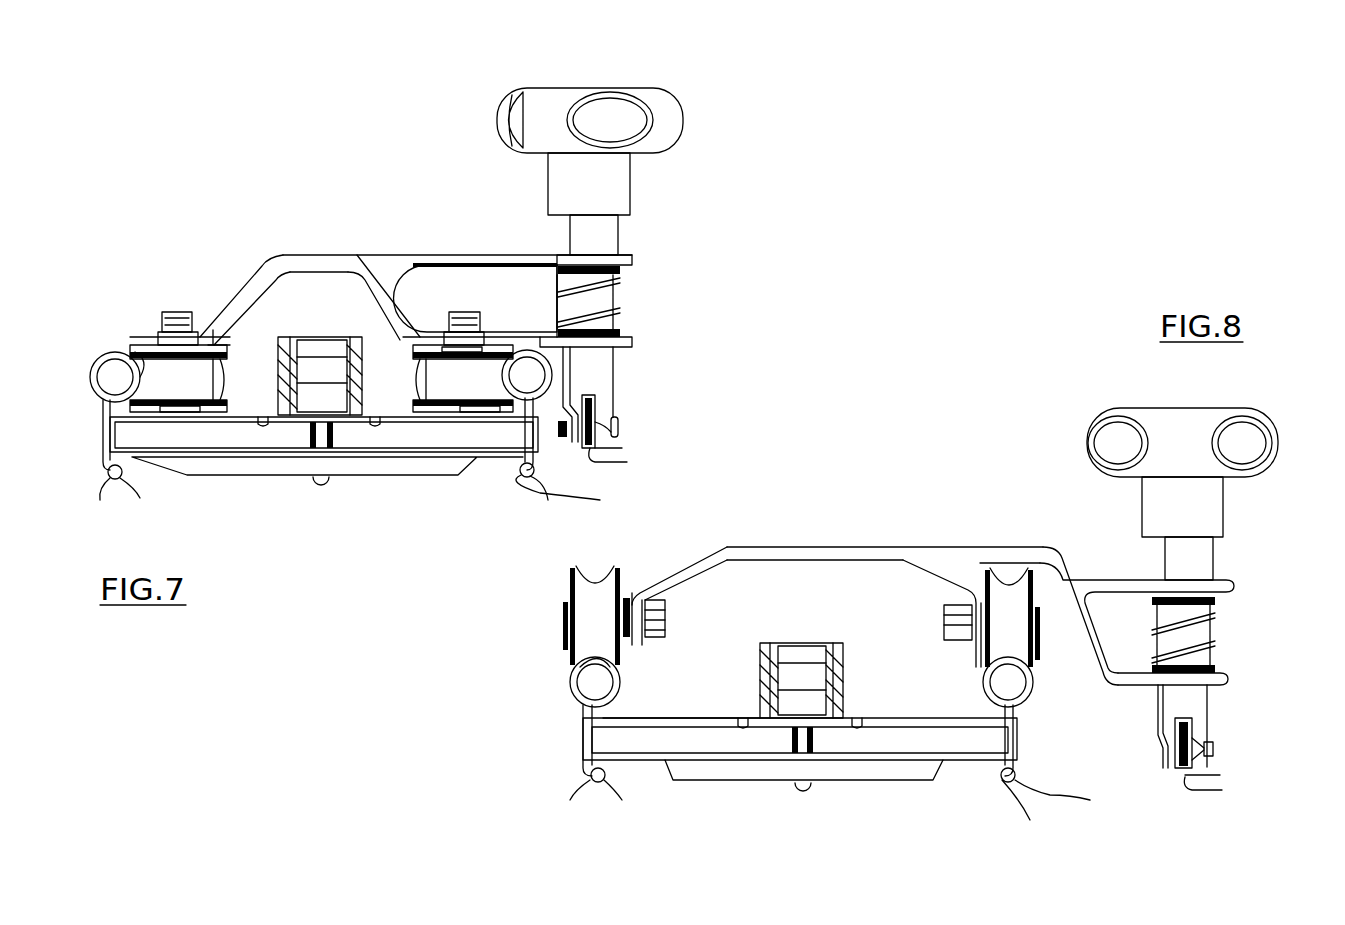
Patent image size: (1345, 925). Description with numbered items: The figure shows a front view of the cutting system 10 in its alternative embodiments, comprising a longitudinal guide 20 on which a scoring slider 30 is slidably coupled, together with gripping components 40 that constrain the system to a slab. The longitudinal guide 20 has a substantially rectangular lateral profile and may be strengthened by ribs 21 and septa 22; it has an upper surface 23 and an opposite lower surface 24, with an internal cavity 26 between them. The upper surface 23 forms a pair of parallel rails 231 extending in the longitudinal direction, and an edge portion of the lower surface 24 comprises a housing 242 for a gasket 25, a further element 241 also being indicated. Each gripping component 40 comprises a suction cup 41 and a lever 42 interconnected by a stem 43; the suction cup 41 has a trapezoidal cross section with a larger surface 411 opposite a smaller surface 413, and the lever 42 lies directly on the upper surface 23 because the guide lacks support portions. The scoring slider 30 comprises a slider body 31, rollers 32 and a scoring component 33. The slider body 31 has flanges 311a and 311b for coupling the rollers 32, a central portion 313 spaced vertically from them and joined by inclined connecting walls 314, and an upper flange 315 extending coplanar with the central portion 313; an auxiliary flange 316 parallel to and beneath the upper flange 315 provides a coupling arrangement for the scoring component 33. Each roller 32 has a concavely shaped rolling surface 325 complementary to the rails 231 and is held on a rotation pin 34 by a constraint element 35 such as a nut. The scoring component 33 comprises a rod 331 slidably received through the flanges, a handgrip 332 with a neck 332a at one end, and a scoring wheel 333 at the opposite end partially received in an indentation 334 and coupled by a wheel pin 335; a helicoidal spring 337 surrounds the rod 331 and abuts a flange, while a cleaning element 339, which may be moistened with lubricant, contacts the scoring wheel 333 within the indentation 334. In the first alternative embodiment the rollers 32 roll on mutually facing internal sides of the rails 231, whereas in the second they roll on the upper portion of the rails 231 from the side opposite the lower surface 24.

In FIG. 7, the cutting system 10 is at (253, 187).
In FIG. 8, the cutting system 10 is at (845, 422).
In FIG. 7, the longitudinal guide 20 is at (100, 405).
In FIG. 8, the longitudinal guide 20 is at (578, 735).
In FIG. 7, the ribs 21 is at (262, 415).
In FIG. 8, the ribs 21 is at (742, 716).
In FIG. 7, the septa 22 is at (330, 450).
In FIG. 8, the septa 22 is at (808, 755).
In FIG. 7, the upper surface 23 is at (400, 385).
In FIG. 8, the upper surface 23 is at (708, 716).
In FIG. 7, the lower surface 24 is at (478, 470).
In FIG. 8, the lower surface 24 is at (958, 765).
In FIG. 7, the gasket 25 is at (533, 475).
In FIG. 8, the gasket 25 is at (596, 783).
In FIG. 7, the internal cavity 26 is at (520, 463).
In FIG. 8, the internal cavity 26 is at (670, 762).
In FIG. 7, the scoring slider 30 is at (483, 143).
In FIG. 8, the scoring slider 30 is at (1080, 467).
In FIG. 7, the slider body 31 is at (438, 252).
In FIG. 8, the slider body 31 is at (932, 542).
In FIG. 7, the rollers 32 is at (222, 376).
In FIG. 8, the rollers 32 is at (600, 568).
In FIG. 7, the scoring component 33 is at (625, 95).
In FIG. 8, the scoring component 33 is at (1240, 410).
In FIG. 7, the rotation pin 34 is at (185, 412).
In FIG. 8, the rotation pin 34 is at (562, 630).
In FIG. 7, the constraint element 35 is at (172, 310).
In FIG. 8, the constraint element 35 is at (662, 635).
In FIG. 7, the gripping component 40 is at (285, 330).
In FIG. 8, the gripping component 40 is at (768, 640).
In FIG. 7, the suction cup 41 is at (408, 478).
In FIG. 8, the suction cup 41 is at (800, 790).
In FIG. 7, the lever 42 is at (328, 336).
In FIG. 8, the lever 42 is at (782, 642).
In FIG. 7, the stem 43 is at (313, 452).
In FIG. 8, the stem 43 is at (790, 755).
In FIG. 7, the rails 231 is at (108, 352).
In FIG. 8, the rails 231 is at (567, 686).
In FIG. 7, the bottom plate end 241 is at (341, 503).
In FIG. 8, the bottom plate end 241 is at (824, 811).
In FIG. 7, the housing 242 is at (353, 499).
In FIG. 8, the housing 242 is at (828, 800).
In FIG. 7, the flange 311a is at (213, 328).
In FIG. 8, the flange 311a is at (642, 647).
In FIG. 7, the flange 311b is at (422, 333).
In FIG. 8, the flange 311b is at (975, 660).
In FIG. 7, the central portion 313 is at (355, 254).
In FIG. 8, the central portion 313 is at (830, 545).
In FIG. 7, the connecting walls 314 is at (255, 300).
In FIG. 8, the connecting walls 314 is at (690, 565).
In FIG. 7, the upper flange 315 is at (500, 253).
In FIG. 8, the upper flange 315 is at (1235, 584).
In FIG. 8, the auxiliary flange 316 is at (1160, 690).
In FIG. 7, the rolling surface 325 is at (138, 370).
In FIG. 8, the rolling surface 325 is at (575, 660).
In FIG. 7, the rod 331 is at (615, 360).
In FIG. 8, the rod 331 is at (1222, 688).
In FIG. 7, the handgrip 332 is at (680, 118).
In FIG. 8, the handgrip 332 is at (1272, 460).
In FIG. 7, the neck 332a is at (632, 185).
In FIG. 8, the neck 332a is at (1223, 520).
In FIG. 7, the scoring wheel 333 is at (627, 462).
In FIG. 8, the scoring wheel 333 is at (1222, 790).
In FIG. 7, the indentation 334 is at (628, 449).
In FIG. 8, the indentation 334 is at (1223, 772).
In FIG. 7, the wheel pin 335 is at (620, 430).
In FIG. 8, the wheel pin 335 is at (1214, 748).
In FIG. 7, the spring 337 is at (618, 305).
In FIG. 7, the cleaning element 339 is at (593, 400).
In FIG. 8, the cleaning element 339 is at (1192, 722).
In FIG. 7, the larger surface 411 is at (465, 462).
In FIG. 8, the larger surface 411 is at (727, 770).
In FIG. 7, the smaller surface 413 is at (400, 475).
In FIG. 8, the smaller surface 413 is at (870, 782).